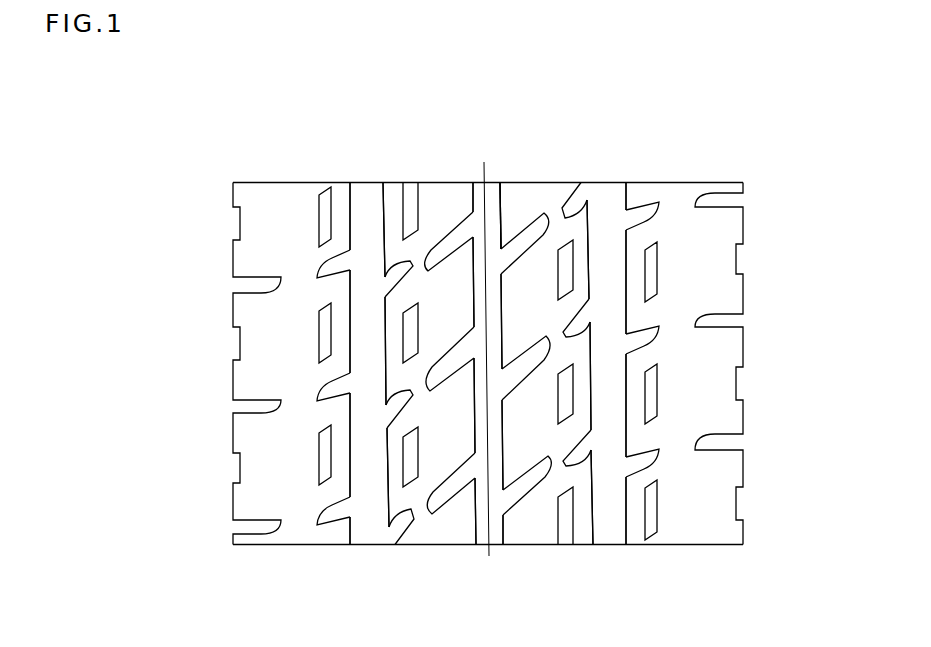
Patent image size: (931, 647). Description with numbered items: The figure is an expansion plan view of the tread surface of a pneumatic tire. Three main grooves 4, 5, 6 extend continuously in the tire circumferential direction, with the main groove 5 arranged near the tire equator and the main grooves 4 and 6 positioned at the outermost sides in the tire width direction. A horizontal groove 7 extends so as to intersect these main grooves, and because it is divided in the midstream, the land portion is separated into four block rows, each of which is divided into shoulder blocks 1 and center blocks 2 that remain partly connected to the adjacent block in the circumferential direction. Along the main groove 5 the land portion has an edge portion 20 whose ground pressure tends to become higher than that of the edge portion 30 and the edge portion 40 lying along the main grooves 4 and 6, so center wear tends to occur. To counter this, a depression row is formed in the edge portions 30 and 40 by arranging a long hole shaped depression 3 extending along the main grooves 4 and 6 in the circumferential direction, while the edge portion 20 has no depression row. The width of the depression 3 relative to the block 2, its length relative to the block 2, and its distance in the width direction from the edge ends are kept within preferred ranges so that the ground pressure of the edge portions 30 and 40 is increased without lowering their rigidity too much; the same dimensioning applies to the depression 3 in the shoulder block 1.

The shoulder block 1 is at (275, 527).
The center block 2 is at (465, 537).
The depression 3 is at (318, 524).
The main groove 4 is at (352, 535).
The main groove 5 is at (493, 540).
The main groove 6 is at (604, 538).
The horizontal groove 7 is at (318, 393).
The edge portion 20 is at (518, 200).
The edge portion 30 is at (571, 210).
The edge portion 40 is at (645, 190).